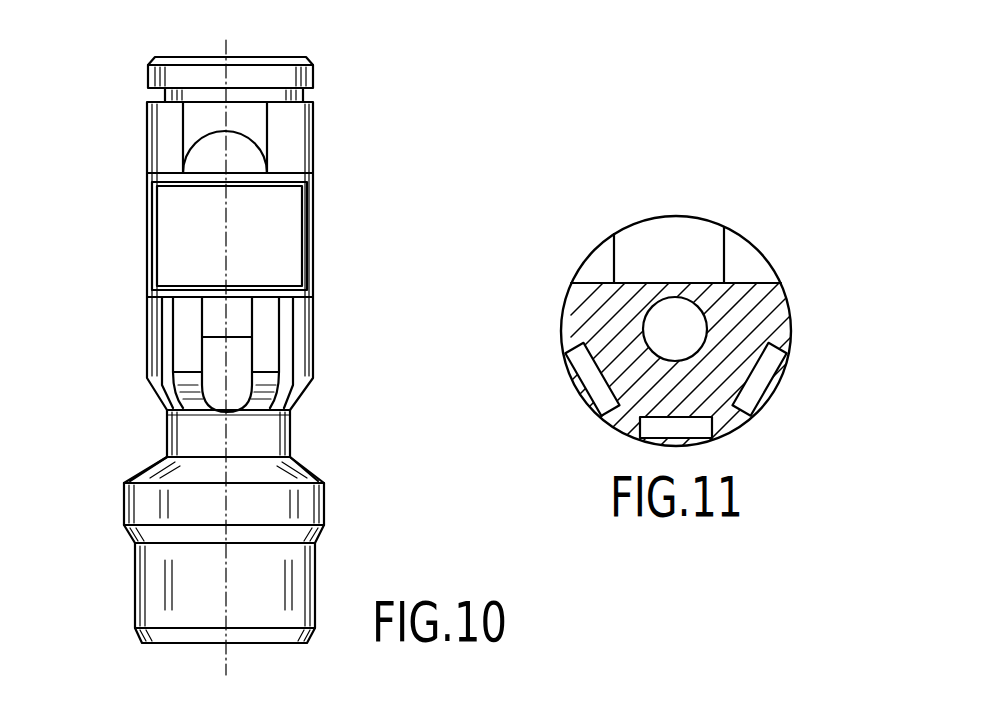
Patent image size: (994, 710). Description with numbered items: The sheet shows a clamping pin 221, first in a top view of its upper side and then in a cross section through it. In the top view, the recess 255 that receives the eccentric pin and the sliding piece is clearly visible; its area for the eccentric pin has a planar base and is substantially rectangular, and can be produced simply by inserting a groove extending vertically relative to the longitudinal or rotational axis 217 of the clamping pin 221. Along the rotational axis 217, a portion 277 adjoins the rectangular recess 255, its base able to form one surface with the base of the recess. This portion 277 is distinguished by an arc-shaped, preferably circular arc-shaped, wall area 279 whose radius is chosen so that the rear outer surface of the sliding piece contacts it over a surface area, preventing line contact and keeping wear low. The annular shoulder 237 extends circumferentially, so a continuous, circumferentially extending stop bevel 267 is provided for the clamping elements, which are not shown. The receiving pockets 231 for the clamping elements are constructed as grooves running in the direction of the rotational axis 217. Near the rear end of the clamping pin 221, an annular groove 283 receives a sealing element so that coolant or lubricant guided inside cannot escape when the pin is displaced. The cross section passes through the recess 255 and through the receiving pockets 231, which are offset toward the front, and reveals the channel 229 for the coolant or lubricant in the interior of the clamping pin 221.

In FIG. 10, the rotational axis 217 is at (226, 660).
In FIG. 10, the clamping pin 221 is at (130, 181).
In FIG. 11, the clamping pin 221 is at (568, 259).
In FIG. 11, the channel 229 is at (689, 316).
In FIG. 10, the receiving pockets 231 is at (230, 370).
In FIG. 11, the receiving pockets 231 is at (580, 362).
In FIG. 10, the annular shoulder 237 is at (312, 512).
In FIG. 10, the recess 255 is at (173, 228).
In FIG. 11, the recess 255 is at (748, 262).
In FIG. 10, the stop bevel 267 is at (297, 467).
In FIG. 10, the portion 277 is at (237, 155).
In FIG. 11, the portion 277 is at (642, 238).
In FIG. 10, the wall area 279 is at (205, 137).
In FIG. 10, the annular groove 283 is at (217, 97).